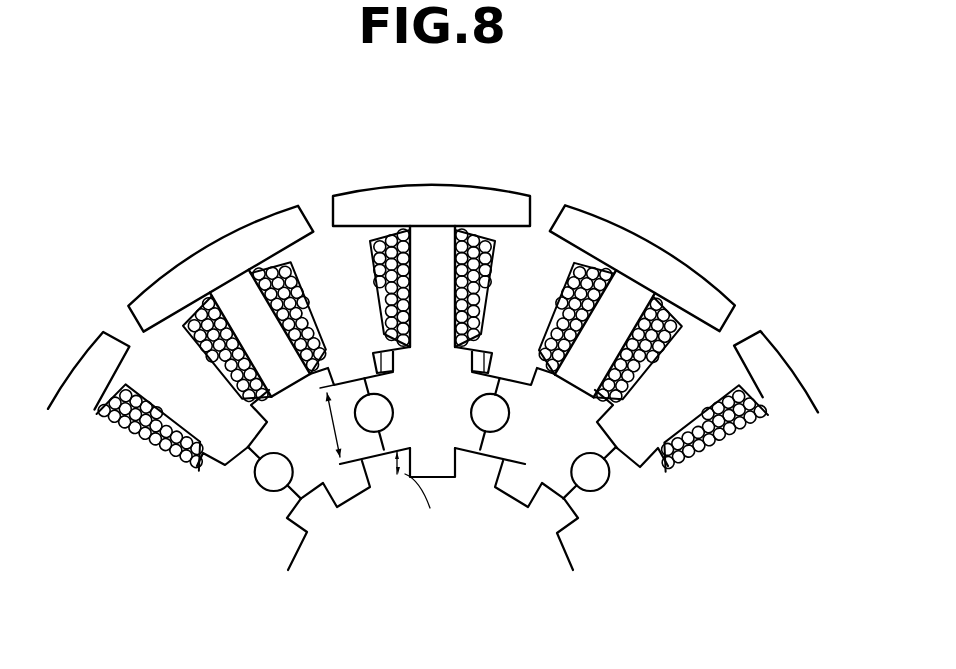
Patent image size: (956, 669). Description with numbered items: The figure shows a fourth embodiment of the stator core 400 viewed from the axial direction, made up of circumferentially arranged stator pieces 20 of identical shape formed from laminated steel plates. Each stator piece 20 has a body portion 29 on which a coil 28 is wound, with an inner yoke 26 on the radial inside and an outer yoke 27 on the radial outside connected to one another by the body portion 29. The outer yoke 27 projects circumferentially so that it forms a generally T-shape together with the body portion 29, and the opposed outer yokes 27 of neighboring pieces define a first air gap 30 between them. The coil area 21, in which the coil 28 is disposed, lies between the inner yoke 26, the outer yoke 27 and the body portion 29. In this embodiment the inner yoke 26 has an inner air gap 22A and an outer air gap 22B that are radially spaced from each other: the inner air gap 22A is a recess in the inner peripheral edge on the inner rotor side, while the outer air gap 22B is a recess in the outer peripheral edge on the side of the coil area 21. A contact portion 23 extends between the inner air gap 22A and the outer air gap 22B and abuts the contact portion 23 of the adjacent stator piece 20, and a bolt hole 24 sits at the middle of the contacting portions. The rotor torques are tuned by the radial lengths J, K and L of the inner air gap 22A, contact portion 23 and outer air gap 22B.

The stator core 400 is at (668, 203).
The stator piece 20 is at (355, 188).
The coil area 21 is at (532, 255).
The inner air gap 22A is at (380, 472).
The outer air gap 22B is at (330, 377).
The contact portion 23 is at (483, 432).
The bolt hole 24 is at (607, 490).
The inner yoke 26 is at (482, 387).
The outer yoke 27 is at (495, 207).
The coil 28 is at (473, 242).
The body portion 29 is at (427, 252).
The first air gap 30 is at (320, 208).